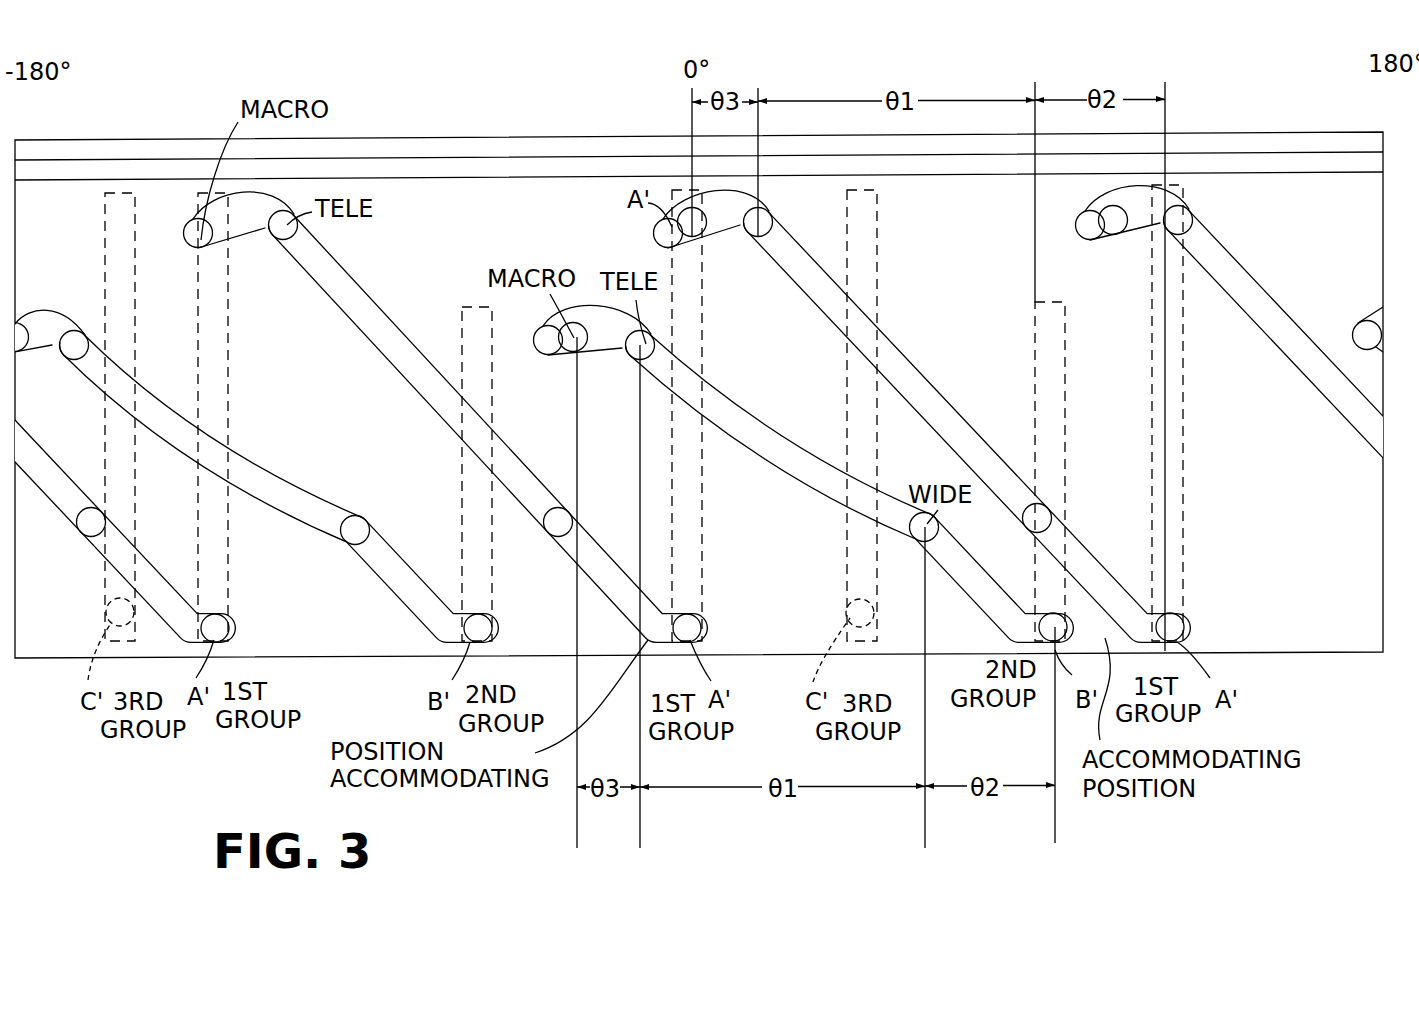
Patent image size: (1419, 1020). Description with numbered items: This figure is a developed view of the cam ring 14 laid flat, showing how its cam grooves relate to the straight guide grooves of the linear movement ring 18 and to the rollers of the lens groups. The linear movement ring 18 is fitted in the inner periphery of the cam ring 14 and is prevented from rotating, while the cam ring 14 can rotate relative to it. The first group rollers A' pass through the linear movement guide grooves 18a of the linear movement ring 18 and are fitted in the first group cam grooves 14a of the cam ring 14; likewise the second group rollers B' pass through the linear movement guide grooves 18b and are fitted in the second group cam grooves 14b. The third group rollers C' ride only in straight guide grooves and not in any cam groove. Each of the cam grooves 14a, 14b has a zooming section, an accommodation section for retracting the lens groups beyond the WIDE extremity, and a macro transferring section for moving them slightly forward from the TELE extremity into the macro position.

The cam ring 14 is at (700, 370).
The first group cam grooves 14a is at (918, 374).
The second group cam grooves 14b is at (766, 438).
The linear movement ring 18 is at (483, 168).
The linear movement guide grooves 18a is at (223, 557).
The linear movement guide grooves 18b is at (490, 553).